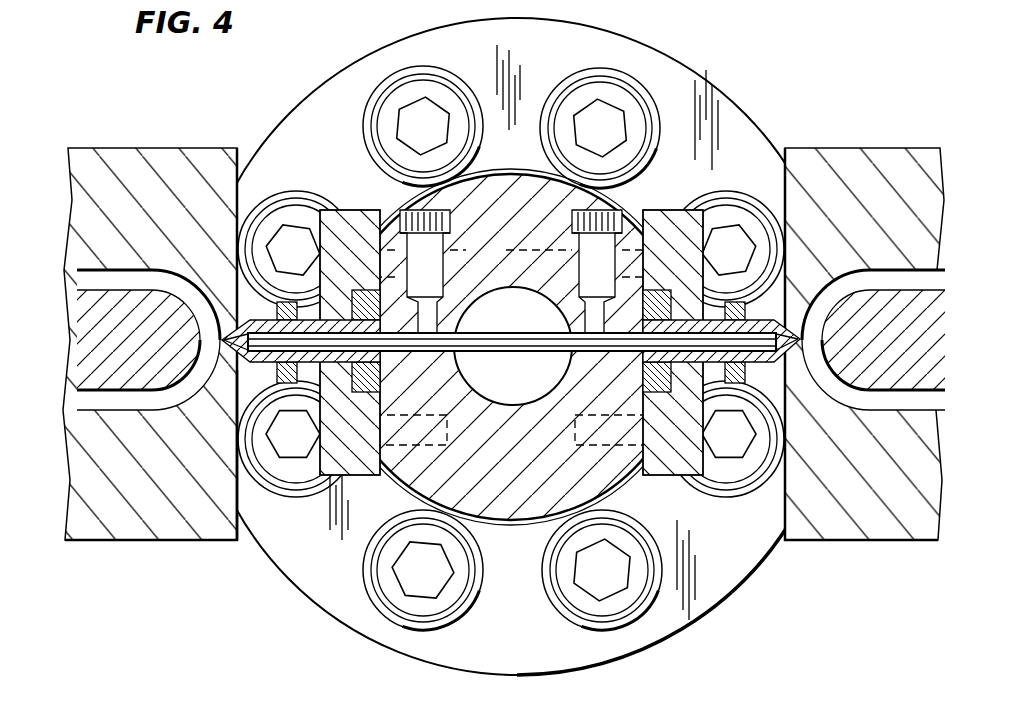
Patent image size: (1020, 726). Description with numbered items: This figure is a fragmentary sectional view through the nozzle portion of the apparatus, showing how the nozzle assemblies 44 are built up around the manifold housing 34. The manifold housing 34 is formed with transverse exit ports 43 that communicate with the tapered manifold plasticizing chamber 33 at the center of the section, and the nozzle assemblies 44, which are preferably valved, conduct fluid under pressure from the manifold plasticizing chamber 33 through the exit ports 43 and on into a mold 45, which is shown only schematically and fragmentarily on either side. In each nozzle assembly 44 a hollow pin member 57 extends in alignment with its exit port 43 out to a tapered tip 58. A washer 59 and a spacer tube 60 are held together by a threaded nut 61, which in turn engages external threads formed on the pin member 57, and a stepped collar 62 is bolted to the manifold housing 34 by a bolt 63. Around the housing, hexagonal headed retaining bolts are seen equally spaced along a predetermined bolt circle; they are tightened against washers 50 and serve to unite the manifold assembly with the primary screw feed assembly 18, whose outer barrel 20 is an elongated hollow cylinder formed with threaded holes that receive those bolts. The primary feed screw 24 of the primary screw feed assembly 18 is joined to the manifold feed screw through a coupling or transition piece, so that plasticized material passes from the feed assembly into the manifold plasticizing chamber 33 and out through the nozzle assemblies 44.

The primary screw feed assembly 18 is at (682, 62).
The outer barrel 20 is at (690, 97).
The primary feed screw 24 is at (403, 136).
The manifold plasticizing chamber 33 is at (482, 397).
The manifold housing 34 is at (528, 225).
The transverse exit ports 43 is at (433, 348).
The nozzle assembly 44 is at (668, 210).
The mold 45 is at (160, 158).
The washers 50 is at (567, 83).
The hollow pin member 57 is at (240, 398).
The tapered tip 58 is at (207, 292).
The washer 59 is at (382, 394).
The spacer tube 60 is at (300, 292).
The threaded nut 61 is at (288, 385).
The stepped collar 62 is at (373, 201).
The bolt 63 is at (470, 447).